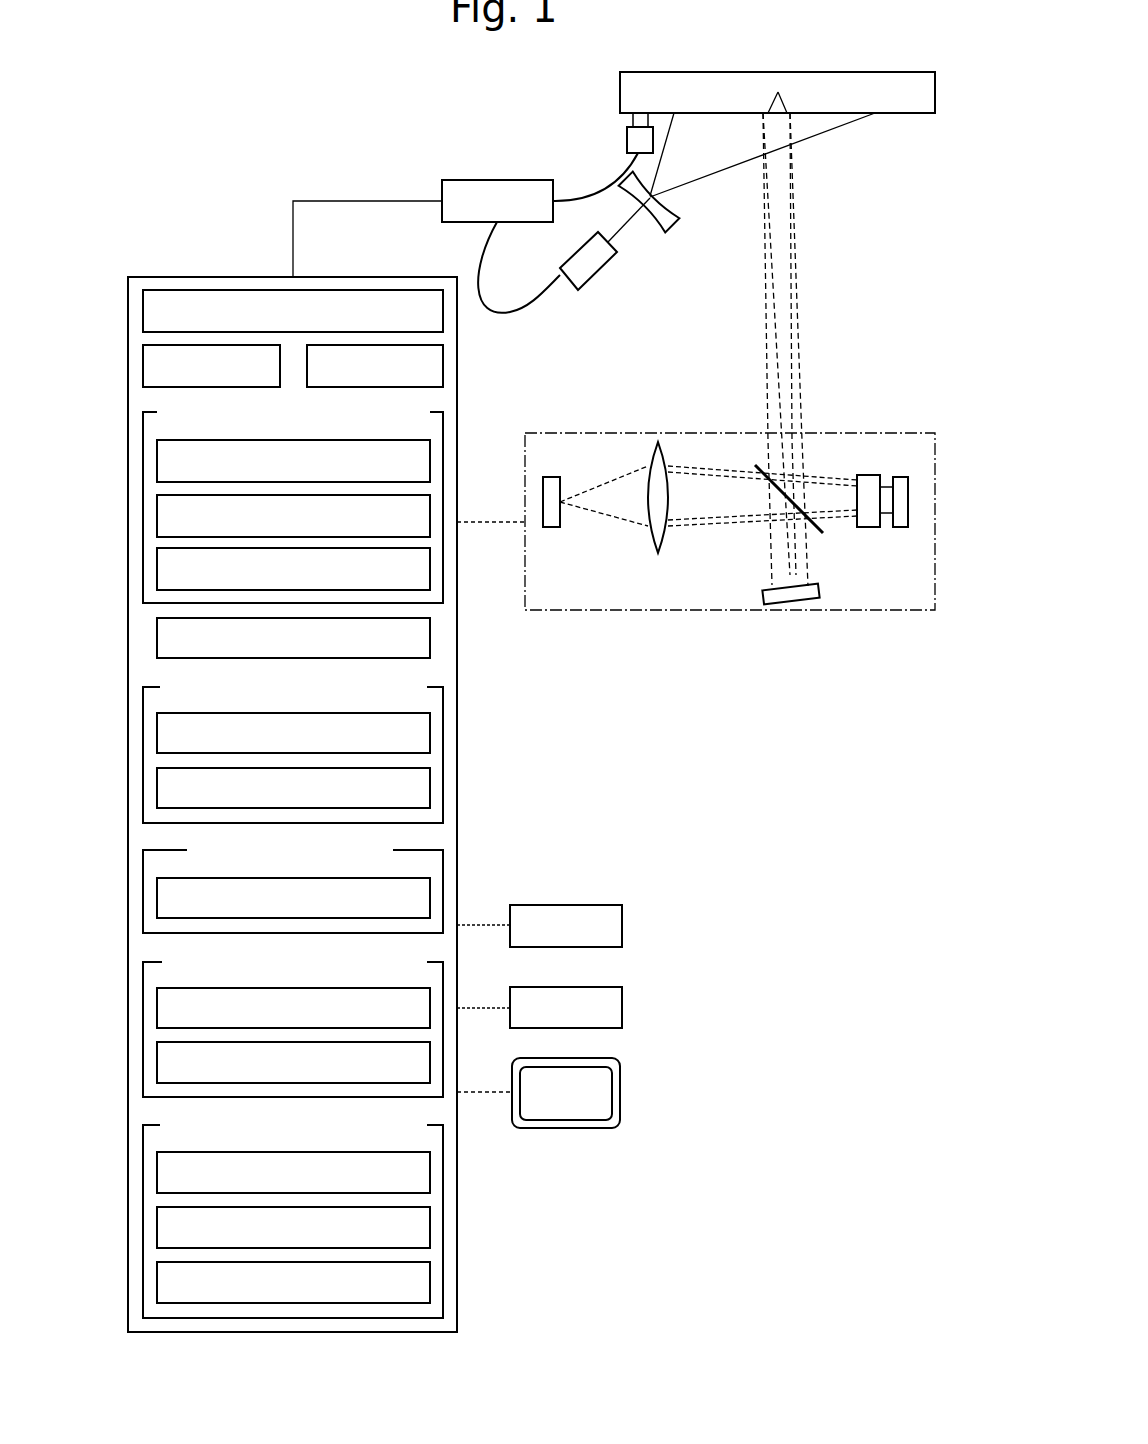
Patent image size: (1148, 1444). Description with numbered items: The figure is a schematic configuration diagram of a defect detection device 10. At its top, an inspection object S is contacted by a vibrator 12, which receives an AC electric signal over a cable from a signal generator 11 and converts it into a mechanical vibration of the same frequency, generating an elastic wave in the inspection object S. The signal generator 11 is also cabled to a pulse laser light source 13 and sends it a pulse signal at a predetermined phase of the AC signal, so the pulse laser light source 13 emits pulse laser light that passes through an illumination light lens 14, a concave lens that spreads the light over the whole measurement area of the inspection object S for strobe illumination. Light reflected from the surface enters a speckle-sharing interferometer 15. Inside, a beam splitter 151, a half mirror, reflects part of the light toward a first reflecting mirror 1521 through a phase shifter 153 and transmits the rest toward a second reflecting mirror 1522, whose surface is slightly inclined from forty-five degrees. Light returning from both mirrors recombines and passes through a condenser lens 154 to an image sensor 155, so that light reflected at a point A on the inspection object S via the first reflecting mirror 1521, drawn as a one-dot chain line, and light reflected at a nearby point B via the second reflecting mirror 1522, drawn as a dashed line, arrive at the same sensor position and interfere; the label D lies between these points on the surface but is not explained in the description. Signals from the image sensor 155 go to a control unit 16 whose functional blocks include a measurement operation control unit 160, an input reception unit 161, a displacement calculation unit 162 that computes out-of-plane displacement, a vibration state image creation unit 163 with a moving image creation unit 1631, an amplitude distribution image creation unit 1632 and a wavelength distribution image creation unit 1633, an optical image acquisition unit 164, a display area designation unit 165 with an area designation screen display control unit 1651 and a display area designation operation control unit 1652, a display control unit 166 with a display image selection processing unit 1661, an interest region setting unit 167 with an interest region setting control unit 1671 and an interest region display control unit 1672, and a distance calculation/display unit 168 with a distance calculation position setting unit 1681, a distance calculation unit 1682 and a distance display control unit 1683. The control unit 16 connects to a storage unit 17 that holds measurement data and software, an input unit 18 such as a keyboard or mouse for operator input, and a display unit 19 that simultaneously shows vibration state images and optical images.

The defect detection device 10 is at (867, 1213).
The signal generator 11 is at (477, 200).
The vibrator 12 is at (627, 137).
The pulse laser light source 13 is at (593, 263).
The illumination light lens 14 is at (662, 223).
The speckle-sharing interferometer 15 is at (525, 612).
The beam splitter 151 is at (762, 470).
The first reflecting mirror 1521 is at (900, 528).
The second reflecting mirror 1522 is at (783, 600).
The phase shifter 153 is at (868, 527).
The condenser lens 154 is at (656, 460).
The image sensor 155 is at (551, 475).
The control unit 16 is at (457, 1332).
The measurement operation control unit 160 is at (138, 283).
The input reception unit 161 is at (143, 347).
The displacement calculation unit 162 is at (443, 366).
The vibration state image creation unit 163 is at (143, 412).
The moving image creation unit 1631 is at (157, 440).
The amplitude distribution image creation unit 1632 is at (157, 497).
The wavelength distribution image creation unit 1633 is at (157, 550).
The optical image acquisition unit 164 is at (157, 620).
The display area designation unit 165 is at (143, 690).
The area designation screen display control unit 1651 is at (157, 715).
The display area designation operation control unit 1652 is at (157, 770).
The display control unit 166 is at (143, 852).
The display image selection processing unit 1661 is at (157, 880).
The interest region setting unit 167 is at (143, 962).
The interest region setting control unit 1671 is at (157, 990).
The interest region display control unit 1672 is at (157, 1045).
The distance calculation/display unit 168 is at (143, 1127).
The distance calculation position setting unit 1681 is at (157, 1155).
The distance calculation unit 1682 is at (157, 1210).
The distance display control unit 1683 is at (157, 1265).
The storage unit 17 is at (622, 947).
The input unit 18 is at (622, 1028).
The display unit 19 is at (618, 1128).
The inspection object S is at (907, 93).
The point A is at (790, 112).
The point B is at (762, 112).
The defect / displacement D is at (779, 95).